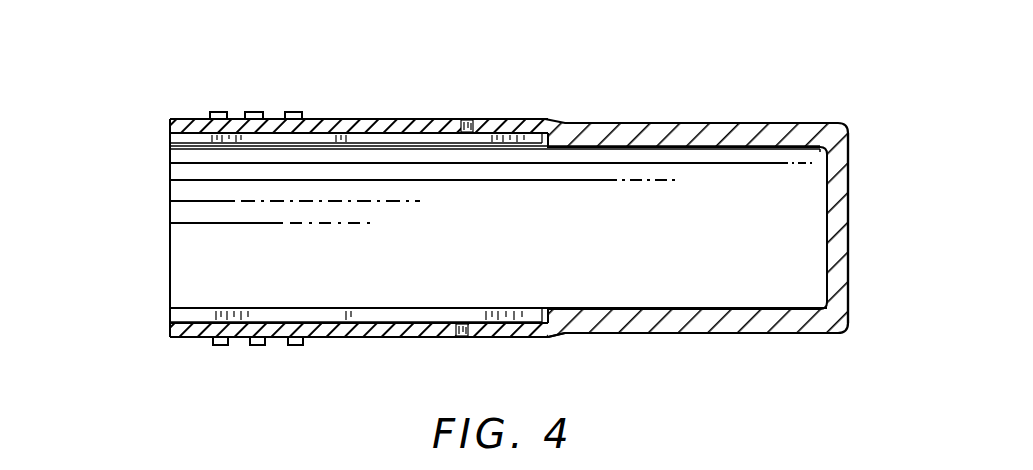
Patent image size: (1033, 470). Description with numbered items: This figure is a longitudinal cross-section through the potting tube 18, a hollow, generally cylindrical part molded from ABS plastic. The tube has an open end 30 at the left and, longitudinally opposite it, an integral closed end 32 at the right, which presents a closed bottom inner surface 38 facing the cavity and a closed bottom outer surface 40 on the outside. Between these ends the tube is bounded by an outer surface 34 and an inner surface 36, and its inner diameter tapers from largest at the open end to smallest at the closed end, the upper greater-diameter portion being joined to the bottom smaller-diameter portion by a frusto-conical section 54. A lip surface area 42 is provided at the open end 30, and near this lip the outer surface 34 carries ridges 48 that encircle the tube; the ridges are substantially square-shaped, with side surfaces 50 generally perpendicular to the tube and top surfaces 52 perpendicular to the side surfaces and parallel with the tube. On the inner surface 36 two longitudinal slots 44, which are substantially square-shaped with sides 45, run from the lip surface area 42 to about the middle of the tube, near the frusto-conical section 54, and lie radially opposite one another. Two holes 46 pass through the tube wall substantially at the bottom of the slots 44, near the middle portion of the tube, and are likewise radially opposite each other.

The potting tube 18 is at (636, 100).
The open end 30 is at (489, 204).
The closed end 32 is at (866, 176).
The outer surface 34 is at (370, 118).
The inner surface 36 is at (612, 237).
The closed bottom inner surface 38 is at (826, 220).
The closed bottom outer surface 40 is at (849, 255).
The lip surface area 42 is at (170, 121).
The longitudinal slots 44 is at (254, 156).
The sides 45 is at (410, 140).
The holes 46 is at (468, 120).
The ridges 48 is at (198, 357).
The side surfaces 50 is at (246, 112).
The top surfaces 52 is at (294, 346).
The frusto-conical section 54 is at (553, 336).